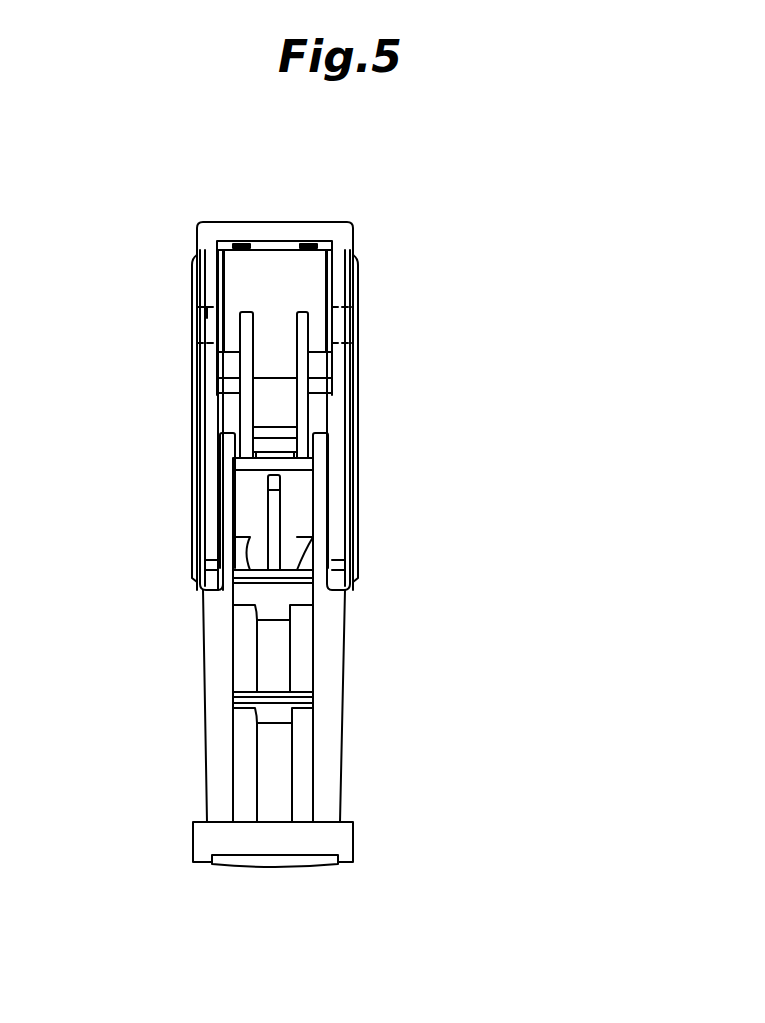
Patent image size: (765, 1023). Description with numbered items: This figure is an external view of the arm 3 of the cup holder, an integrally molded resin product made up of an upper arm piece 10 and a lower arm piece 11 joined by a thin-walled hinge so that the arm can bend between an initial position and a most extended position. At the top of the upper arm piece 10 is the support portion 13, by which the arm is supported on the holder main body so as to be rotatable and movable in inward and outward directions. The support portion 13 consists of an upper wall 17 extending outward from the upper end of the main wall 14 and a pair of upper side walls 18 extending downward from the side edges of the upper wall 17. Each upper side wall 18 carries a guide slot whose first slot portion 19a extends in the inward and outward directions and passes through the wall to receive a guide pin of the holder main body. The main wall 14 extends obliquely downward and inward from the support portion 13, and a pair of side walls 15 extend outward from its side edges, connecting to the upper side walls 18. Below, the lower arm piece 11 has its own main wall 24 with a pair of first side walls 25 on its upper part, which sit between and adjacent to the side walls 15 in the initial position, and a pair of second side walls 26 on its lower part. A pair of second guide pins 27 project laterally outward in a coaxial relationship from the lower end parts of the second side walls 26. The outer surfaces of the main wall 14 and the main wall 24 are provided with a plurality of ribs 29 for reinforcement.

The arm 3 is at (405, 180).
The upper arm piece 10 is at (365, 378).
The lower arm piece 11 is at (352, 713).
The support portion 13 is at (267, 146).
The main wall 14 is at (315, 413).
The side walls 15 is at (337, 459).
The upper wall 17 is at (238, 220).
The upper side walls 18 is at (207, 272).
The first slot portion 19a is at (197, 328).
The main wall 24 is at (275, 762).
The first side walls 25 is at (318, 527).
The second side walls 26 is at (335, 639).
The second guide pins 27 is at (342, 840).
The ribs 29 is at (273, 512).